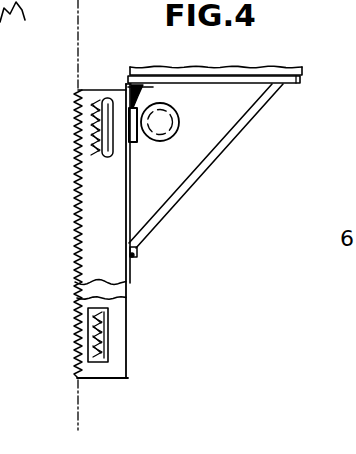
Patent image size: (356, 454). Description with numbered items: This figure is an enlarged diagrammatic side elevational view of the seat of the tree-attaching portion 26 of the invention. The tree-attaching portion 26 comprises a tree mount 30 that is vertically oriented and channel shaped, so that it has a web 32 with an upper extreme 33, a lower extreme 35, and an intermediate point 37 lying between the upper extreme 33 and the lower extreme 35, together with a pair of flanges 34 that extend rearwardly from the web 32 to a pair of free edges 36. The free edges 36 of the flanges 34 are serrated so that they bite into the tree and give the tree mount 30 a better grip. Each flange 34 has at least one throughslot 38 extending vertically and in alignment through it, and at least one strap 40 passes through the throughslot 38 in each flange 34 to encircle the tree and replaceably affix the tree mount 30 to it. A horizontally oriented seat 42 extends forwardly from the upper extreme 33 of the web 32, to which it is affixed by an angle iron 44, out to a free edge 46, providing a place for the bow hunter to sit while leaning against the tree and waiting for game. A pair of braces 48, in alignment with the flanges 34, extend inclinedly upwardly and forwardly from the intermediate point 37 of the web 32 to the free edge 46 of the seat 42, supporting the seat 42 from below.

The tree-attaching portion 26 is at (272, 54).
The tree mount 30 is at (97, 218).
The web 32 is at (130, 188).
The upper extreme 33 is at (125, 87).
The flanges 34 is at (127, 268).
The lower extreme 35 is at (126, 272).
The free edges 36 is at (77, 172).
The intermediate point 37 is at (137, 255).
The throughslot 38 is at (112, 105).
The strap 40 is at (97, 121).
The seat 42 is at (220, 73).
The angle iron 44 is at (153, 87).
The free edge 46 is at (302, 78).
The braces 48 is at (222, 153).